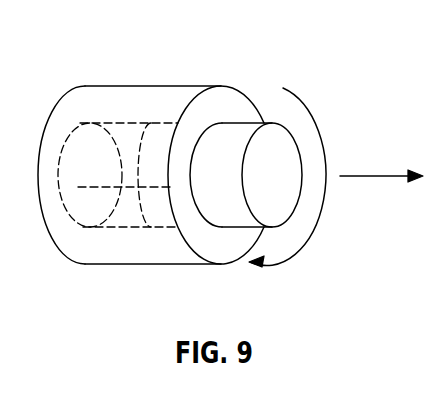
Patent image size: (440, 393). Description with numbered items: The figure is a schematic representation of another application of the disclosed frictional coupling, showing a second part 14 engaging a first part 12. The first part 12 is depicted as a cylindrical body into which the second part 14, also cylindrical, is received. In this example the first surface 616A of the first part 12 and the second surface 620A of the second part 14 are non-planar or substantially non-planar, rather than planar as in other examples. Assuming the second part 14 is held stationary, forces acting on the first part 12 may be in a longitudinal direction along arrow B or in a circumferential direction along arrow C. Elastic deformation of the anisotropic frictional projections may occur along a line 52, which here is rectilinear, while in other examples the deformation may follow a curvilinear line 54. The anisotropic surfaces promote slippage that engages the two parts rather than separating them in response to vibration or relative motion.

The first part 12 is at (173, 256).
The second part 14 is at (290, 177).
The line 52 is at (100, 190).
The curvilinear line 54 is at (143, 207).
The first surface 616A is at (188, 133).
The second surface 620A is at (233, 137).
The arrow C is at (313, 116).
The arrow B is at (384, 179).